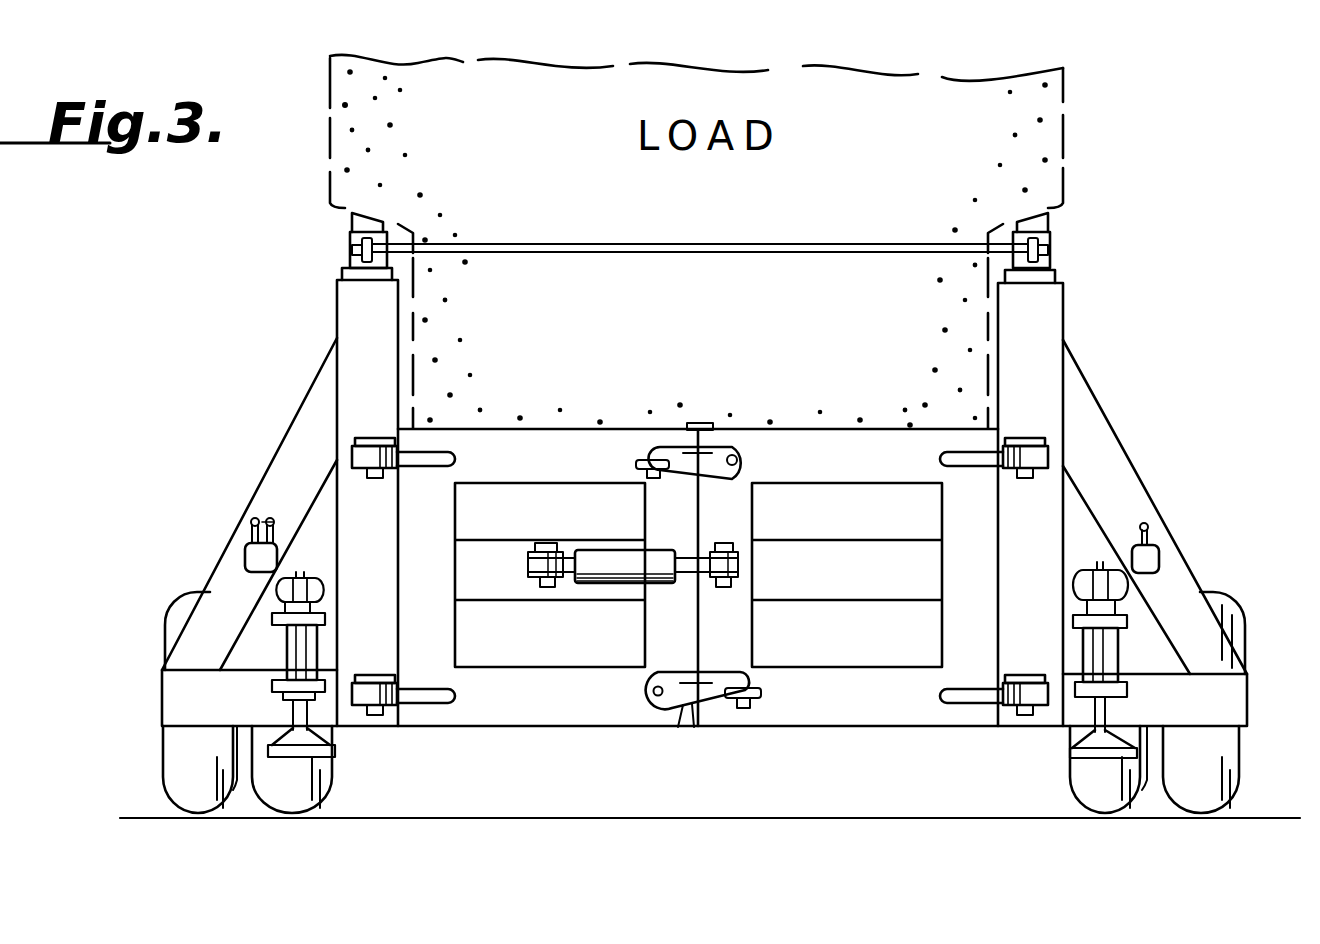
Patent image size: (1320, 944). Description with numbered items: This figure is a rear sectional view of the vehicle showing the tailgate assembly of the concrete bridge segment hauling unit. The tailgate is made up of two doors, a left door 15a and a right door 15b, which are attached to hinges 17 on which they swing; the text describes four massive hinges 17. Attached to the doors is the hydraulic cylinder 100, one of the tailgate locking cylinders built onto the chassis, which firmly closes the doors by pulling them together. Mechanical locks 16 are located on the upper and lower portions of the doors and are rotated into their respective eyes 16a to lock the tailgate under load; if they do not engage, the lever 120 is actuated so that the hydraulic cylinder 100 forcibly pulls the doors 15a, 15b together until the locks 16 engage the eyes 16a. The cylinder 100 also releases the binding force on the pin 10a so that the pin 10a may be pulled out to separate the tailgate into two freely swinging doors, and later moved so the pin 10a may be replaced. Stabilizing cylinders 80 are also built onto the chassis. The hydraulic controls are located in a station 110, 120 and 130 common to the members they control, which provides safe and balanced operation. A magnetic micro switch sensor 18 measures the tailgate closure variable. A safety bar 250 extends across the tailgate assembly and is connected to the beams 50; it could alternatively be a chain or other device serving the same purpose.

The pin 10a is at (733, 546).
The left tailgate door 15a is at (527, 715).
The right tailgate door 15b is at (870, 730).
The mechanical lock 16 is at (736, 456).
The eye 16a is at (646, 457).
The hinge 17 is at (386, 440).
The magnetic micro switch sensor 18 is at (703, 424).
The beam 50 is at (1048, 262).
The stabilizing cylinder 80 is at (315, 661).
The hydraulic cylinder 100 is at (614, 562).
The control station 110 is at (252, 524).
The hydraulic control lever 120 is at (268, 520).
The control station 130 is at (1147, 553).
The safety bar 250 is at (706, 248).